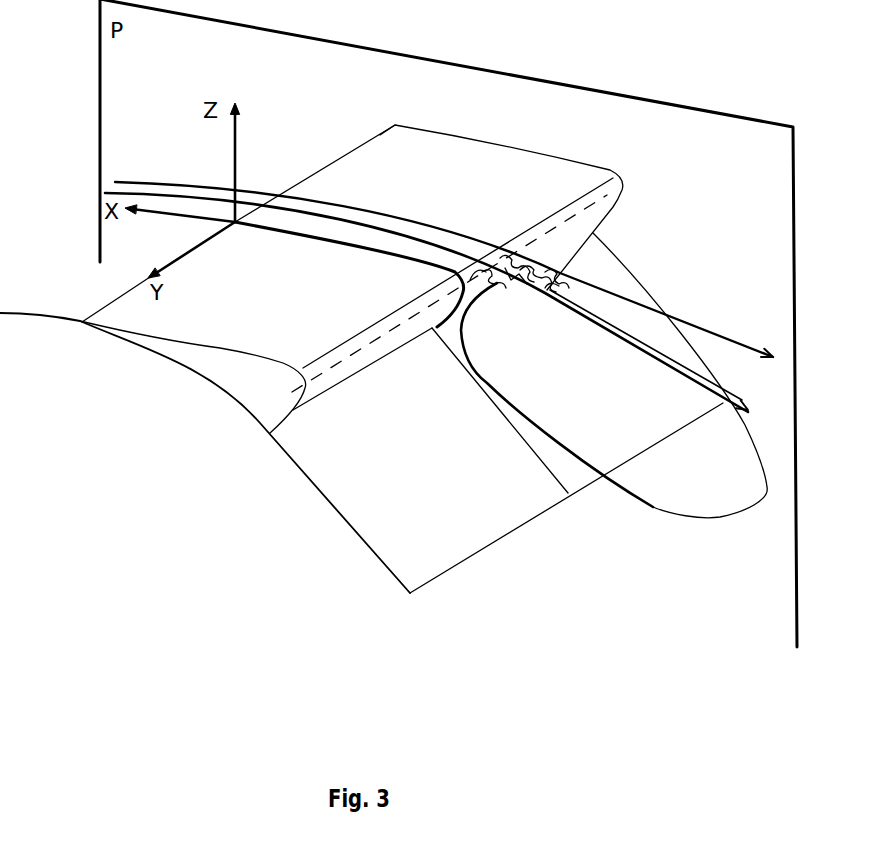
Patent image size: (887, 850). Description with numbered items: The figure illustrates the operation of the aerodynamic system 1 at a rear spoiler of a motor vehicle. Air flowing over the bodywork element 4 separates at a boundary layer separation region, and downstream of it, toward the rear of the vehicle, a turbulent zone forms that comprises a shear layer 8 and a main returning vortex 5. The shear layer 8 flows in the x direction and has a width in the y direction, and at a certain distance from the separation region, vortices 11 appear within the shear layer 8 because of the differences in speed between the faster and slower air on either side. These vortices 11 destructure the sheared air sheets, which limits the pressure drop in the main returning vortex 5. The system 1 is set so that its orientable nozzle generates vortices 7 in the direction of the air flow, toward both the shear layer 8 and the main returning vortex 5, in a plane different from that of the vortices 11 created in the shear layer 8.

The aerodynamic system 1 is at (325, 373).
The bodywork element 4 is at (197, 347).
The main returning vortex 5 is at (658, 512).
The vortices 7 is at (500, 280).
The shear layer 8 is at (662, 328).
The vortices 11 is at (560, 273).